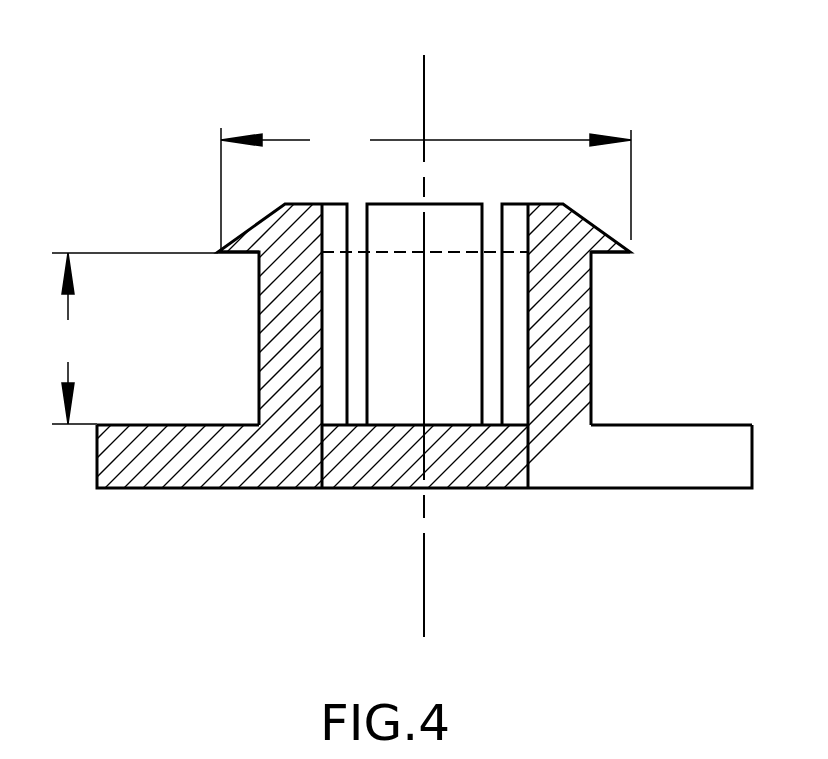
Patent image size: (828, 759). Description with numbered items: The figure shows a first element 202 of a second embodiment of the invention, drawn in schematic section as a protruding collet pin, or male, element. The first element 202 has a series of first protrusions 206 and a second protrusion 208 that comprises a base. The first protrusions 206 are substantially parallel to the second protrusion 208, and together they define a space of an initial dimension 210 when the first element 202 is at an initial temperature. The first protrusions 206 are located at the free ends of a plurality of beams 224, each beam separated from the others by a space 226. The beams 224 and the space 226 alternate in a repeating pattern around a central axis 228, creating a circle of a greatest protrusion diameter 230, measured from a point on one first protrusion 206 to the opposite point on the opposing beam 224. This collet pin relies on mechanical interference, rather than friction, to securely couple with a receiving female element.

The first element 202 is at (121, 450).
The first protrusions 206 is at (236, 257).
The second protrusion 208 is at (168, 425).
The initial dimension 210 is at (131, 338).
The beams 224 is at (397, 370).
The space 226 is at (496, 225).
The central axis 228 is at (426, 327).
The protrusion diameter 230 is at (426, 187).